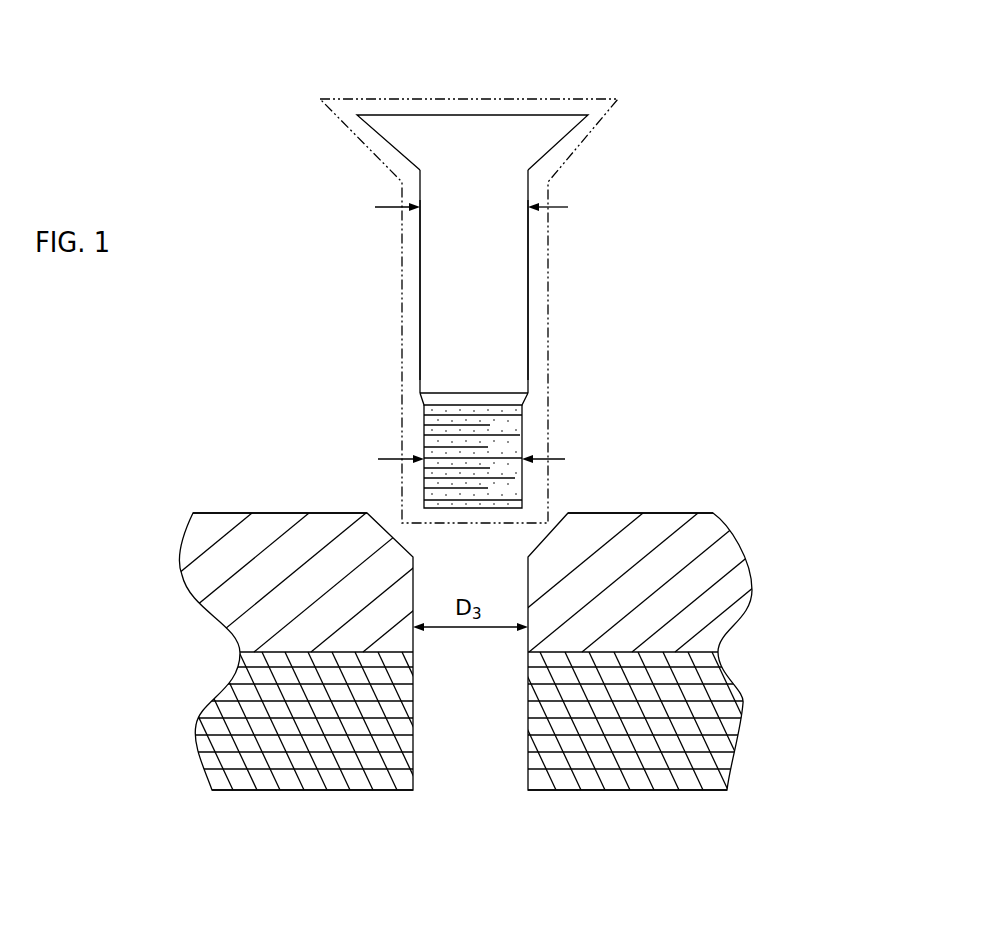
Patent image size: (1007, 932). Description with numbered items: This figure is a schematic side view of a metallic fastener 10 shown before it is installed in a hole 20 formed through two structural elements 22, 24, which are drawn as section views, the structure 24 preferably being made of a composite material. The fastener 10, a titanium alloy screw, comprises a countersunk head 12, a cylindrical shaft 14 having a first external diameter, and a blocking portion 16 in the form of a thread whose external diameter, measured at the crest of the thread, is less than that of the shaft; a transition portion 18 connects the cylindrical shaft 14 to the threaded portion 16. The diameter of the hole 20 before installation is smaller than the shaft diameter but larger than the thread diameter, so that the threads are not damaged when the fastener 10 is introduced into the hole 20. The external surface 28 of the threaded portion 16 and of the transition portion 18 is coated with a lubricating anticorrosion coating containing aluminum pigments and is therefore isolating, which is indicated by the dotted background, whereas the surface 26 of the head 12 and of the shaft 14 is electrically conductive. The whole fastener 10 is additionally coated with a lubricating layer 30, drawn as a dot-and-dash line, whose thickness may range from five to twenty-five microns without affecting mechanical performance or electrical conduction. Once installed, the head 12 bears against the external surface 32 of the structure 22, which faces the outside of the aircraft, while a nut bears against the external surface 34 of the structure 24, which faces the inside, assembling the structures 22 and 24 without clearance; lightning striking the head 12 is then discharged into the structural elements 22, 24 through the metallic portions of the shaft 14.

The fastener 10 is at (678, 111).
The countersunk head 12 is at (385, 114).
The cylindrical shaft 14 is at (417, 283).
The blocking portion 16 is at (422, 432).
The transition portion 18 is at (503, 400).
The hole 20 is at (413, 762).
The structural element 22 is at (703, 538).
The structural element 24 is at (735, 757).
The surface 26 is at (478, 303).
The external surface 28 is at (505, 448).
The lubricating layer 30 is at (398, 325).
The external surface 32 is at (587, 512).
The external surface 34 is at (612, 790).